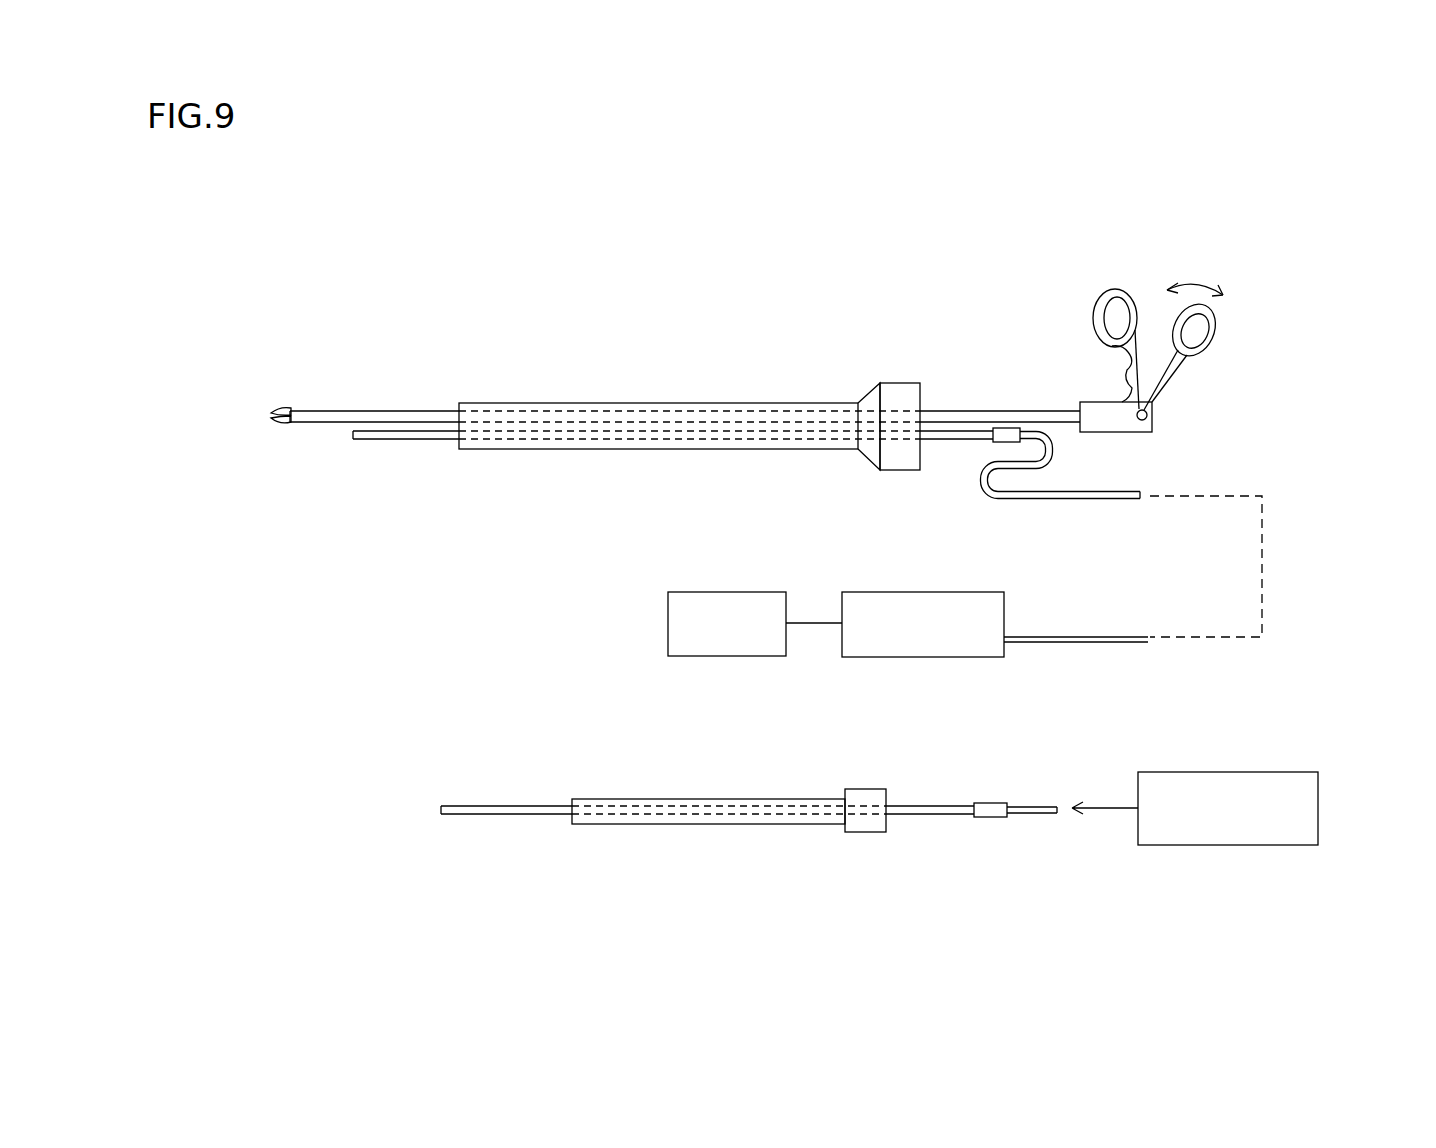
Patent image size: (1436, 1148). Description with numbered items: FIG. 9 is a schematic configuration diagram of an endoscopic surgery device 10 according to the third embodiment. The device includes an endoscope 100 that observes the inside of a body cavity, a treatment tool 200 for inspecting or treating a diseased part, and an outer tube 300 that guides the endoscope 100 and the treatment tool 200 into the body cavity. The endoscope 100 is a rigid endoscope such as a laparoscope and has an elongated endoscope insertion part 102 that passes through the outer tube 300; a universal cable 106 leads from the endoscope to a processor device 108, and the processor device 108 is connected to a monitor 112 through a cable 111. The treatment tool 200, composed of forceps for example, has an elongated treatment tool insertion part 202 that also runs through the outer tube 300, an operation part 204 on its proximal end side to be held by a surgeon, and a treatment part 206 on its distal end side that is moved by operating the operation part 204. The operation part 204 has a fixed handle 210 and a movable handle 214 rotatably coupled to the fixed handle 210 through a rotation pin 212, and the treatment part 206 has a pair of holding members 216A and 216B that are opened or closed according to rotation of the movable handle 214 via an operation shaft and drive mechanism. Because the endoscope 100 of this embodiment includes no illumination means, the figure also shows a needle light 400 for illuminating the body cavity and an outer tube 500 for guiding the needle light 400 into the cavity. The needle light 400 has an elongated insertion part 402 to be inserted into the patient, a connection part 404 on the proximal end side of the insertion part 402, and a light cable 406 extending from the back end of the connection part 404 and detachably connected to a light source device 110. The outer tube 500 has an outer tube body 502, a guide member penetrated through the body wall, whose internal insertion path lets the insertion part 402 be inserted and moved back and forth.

The endoscopic surgery device 10 is at (636, 287).
The endoscope 100 is at (1035, 518).
The endoscope insertion part 102 is at (443, 442).
The universal cable 106 is at (980, 490).
The processor device 108 is at (926, 660).
The light source device 110 is at (1228, 771).
The cable 111 is at (812, 628).
The monitor 112 is at (731, 658).
The treatment tool 200 is at (1150, 258).
The treatment tool insertion part 202 is at (430, 411).
The operation part 204 is at (1068, 323).
The treatment part 206 is at (292, 396).
The fixed handle 210 is at (1107, 295).
The rotation pin 212 is at (1148, 416).
The movable handle 214 is at (1215, 330).
The holding member 216A is at (276, 409).
The holding member 216B is at (276, 422).
The outer tube 300 is at (704, 374).
The needle light 400 is at (934, 786).
The insertion part 402 is at (503, 813).
The connection part 404 is at (985, 816).
The light cable 406 is at (1043, 814).
The outer tube 500 is at (697, 826).
The outer tube body 502 is at (799, 798).